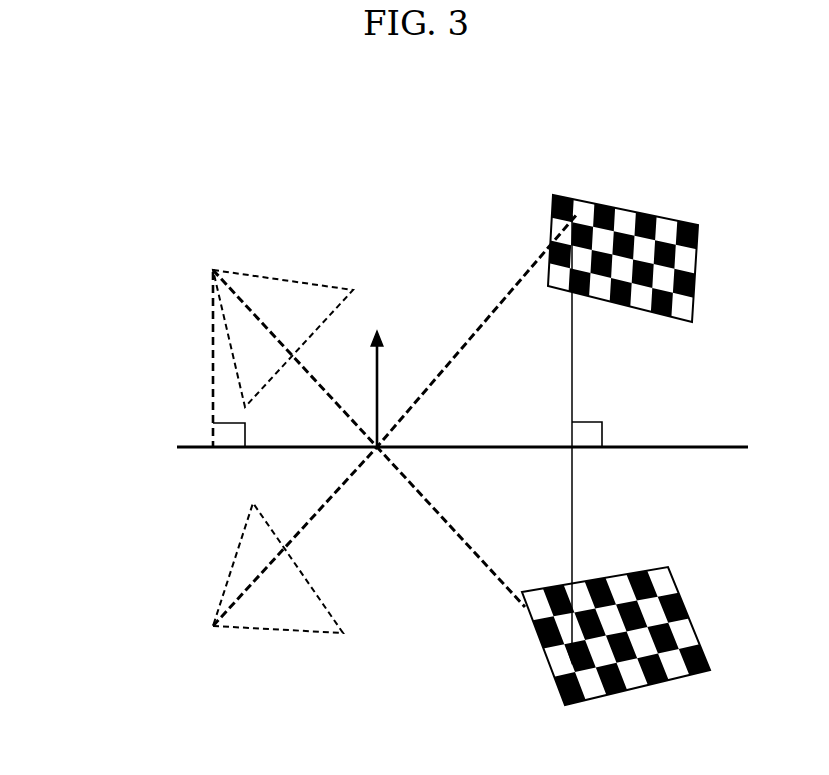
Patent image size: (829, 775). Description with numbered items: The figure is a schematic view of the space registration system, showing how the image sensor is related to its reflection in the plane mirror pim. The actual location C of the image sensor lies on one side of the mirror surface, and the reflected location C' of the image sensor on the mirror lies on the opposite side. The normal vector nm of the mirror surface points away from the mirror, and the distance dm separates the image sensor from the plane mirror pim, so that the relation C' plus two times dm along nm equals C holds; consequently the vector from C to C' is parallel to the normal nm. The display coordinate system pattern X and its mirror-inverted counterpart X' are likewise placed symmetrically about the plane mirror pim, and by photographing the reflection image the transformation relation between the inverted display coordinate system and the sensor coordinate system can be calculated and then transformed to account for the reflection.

The actual location of the image sensor C is at (354, 423).
The location of the image sensor on the mirror C' is at (380, 446).
The checkerboard calibration pattern X is at (599, 426).
The mirrored checkerboard pattern X' is at (602, 636).
The distance between the image sensor and the plane mirror dm is at (191, 359).
The normal vector of the mirror surface nm is at (397, 385).
The plane mirror pim is at (418, 441).